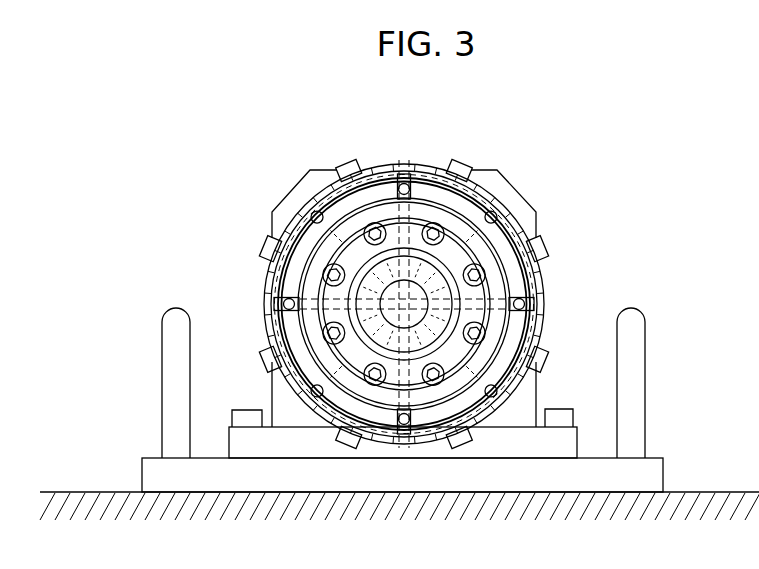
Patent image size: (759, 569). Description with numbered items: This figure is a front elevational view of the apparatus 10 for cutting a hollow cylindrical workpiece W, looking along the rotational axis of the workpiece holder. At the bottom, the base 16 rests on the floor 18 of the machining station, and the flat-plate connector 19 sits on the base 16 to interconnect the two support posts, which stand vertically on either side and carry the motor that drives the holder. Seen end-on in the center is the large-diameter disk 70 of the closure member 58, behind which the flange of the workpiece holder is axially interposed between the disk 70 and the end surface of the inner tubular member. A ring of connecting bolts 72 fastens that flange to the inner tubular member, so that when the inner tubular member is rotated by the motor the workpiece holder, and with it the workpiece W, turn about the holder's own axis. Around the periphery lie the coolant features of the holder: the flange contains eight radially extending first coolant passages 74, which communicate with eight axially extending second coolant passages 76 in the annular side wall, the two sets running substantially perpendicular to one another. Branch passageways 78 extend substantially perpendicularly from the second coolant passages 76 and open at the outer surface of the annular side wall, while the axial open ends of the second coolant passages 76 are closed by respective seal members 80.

The apparatus 10 is at (230, 161).
The base 16 is at (648, 477).
The floor 18 is at (736, 502).
The connector 19 is at (568, 442).
The large-diameter disk 70 is at (472, 302).
The closure member 58 is at (461, 304).
The connecting bolts 72 is at (440, 222).
The first coolant passages 74 is at (358, 166).
The second coolant passages 76 is at (271, 219).
The branch passageways 78 is at (407, 172).
The seal members 80 is at (484, 214).
The hollow cylindrical workpiece W is at (534, 322).